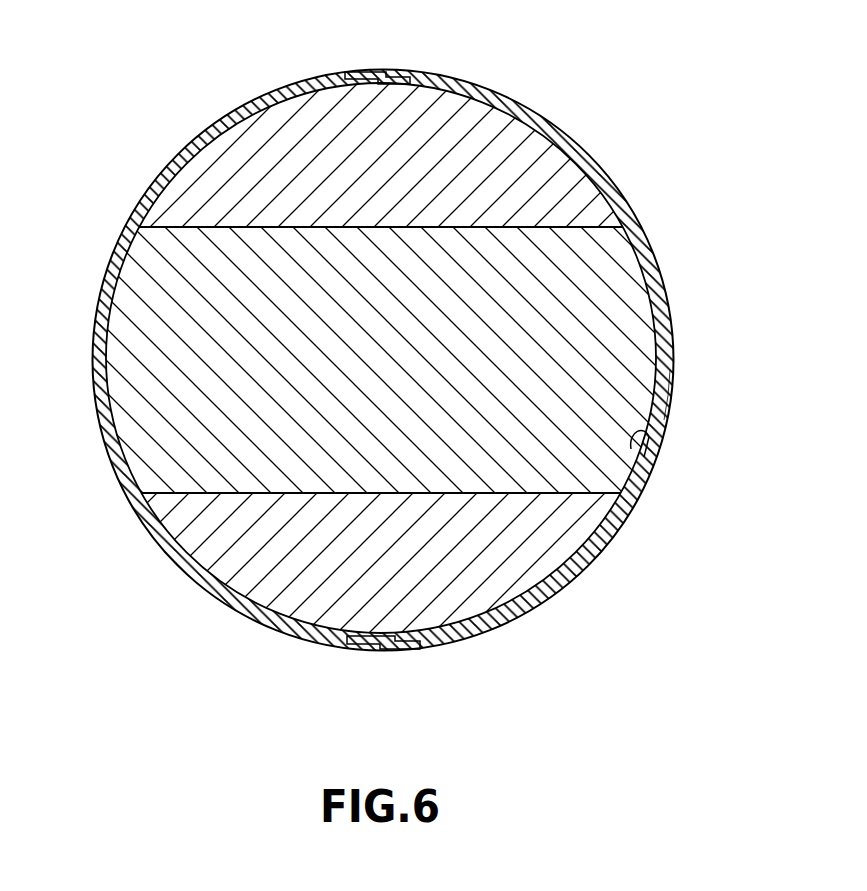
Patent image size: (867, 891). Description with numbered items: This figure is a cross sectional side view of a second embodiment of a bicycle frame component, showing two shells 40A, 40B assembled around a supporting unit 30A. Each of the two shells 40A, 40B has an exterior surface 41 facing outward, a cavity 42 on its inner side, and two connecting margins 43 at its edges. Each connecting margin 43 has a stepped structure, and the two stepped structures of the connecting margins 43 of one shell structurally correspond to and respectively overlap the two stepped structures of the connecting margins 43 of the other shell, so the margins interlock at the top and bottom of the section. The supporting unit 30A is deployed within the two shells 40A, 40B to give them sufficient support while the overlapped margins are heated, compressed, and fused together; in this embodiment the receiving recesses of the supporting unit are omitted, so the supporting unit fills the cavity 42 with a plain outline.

The supporting unit 30A is at (622, 336).
The shell 40A is at (620, 158).
The shell 40B is at (170, 142).
The exterior surface 41 is at (664, 391).
The cavity 42 is at (638, 457).
The connecting margin 43 is at (357, 82).